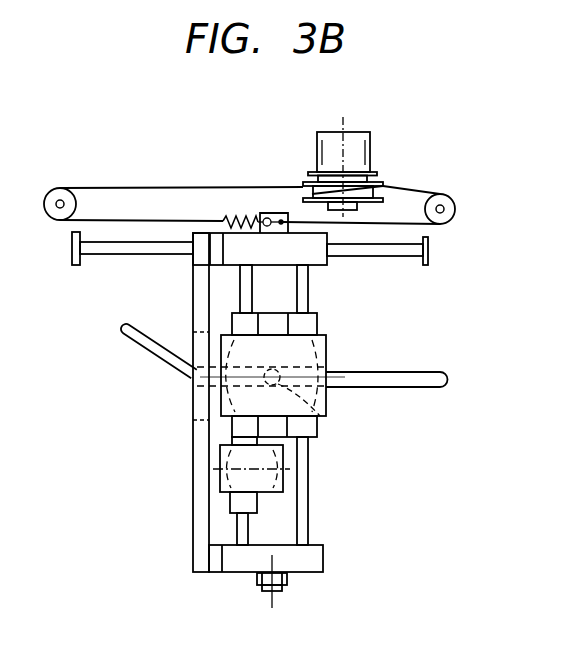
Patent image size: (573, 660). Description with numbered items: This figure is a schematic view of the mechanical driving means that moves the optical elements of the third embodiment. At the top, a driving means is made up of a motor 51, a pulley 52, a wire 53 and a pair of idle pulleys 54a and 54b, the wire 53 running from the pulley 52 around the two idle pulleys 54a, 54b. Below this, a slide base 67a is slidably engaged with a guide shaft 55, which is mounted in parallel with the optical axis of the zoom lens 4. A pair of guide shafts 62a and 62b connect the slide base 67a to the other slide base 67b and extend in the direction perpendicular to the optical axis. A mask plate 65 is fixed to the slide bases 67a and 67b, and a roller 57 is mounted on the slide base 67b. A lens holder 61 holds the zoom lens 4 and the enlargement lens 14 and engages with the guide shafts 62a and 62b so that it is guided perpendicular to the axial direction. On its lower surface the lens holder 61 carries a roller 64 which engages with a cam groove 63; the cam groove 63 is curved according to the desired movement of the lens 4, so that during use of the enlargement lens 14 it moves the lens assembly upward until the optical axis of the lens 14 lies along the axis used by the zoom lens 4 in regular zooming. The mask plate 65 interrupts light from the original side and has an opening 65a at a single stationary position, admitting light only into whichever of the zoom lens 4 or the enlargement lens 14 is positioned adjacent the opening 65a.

The zoom lens 4 is at (322, 418).
The enlargement lens 14 is at (283, 485).
The motor 51 is at (370, 140).
The pulley 52 is at (383, 183).
The wire 53 is at (200, 187).
The idle pulley 54a is at (60, 188).
The idle pulley 54b is at (455, 203).
The guide shaft 55 is at (400, 256).
The roller 57 is at (258, 580).
The lens holder 61 is at (320, 326).
The guide shaft 62a is at (240, 289).
The guide shaft 62b is at (310, 298).
The cam groove 63 is at (425, 388).
The roller 64 is at (326, 413).
The mask plate 65 is at (193, 462).
The opening 65a is at (192, 392).
The slide base 67a is at (328, 266).
The slide base 67b is at (323, 562).